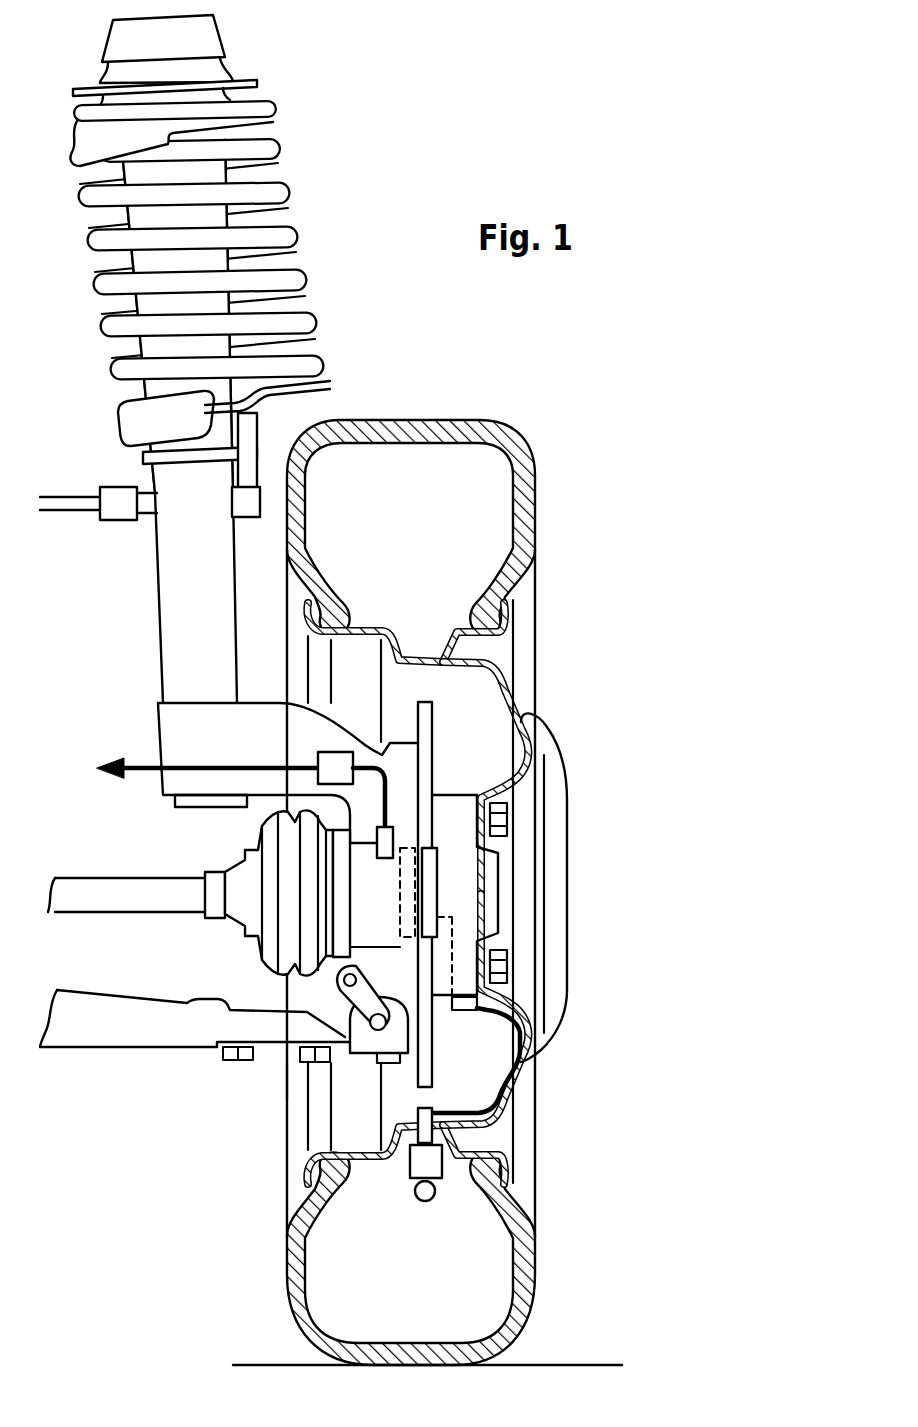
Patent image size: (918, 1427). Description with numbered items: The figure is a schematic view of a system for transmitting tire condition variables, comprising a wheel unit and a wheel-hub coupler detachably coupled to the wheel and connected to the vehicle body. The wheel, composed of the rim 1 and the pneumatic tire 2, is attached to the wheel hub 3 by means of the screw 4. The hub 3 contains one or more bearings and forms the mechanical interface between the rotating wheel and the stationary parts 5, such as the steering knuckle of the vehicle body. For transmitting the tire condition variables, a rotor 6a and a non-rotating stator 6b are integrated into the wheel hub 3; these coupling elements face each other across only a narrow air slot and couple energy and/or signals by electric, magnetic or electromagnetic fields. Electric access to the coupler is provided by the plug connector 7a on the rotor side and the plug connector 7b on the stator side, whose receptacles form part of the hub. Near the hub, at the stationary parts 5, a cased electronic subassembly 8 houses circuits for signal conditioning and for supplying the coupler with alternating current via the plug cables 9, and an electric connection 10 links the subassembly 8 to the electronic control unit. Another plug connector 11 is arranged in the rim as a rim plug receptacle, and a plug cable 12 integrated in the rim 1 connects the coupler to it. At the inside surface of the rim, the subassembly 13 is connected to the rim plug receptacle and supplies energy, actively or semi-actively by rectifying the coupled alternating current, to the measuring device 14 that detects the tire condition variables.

The rim 1 is at (518, 706).
The pneumatic tire 2 is at (487, 463).
The wheel hub 3 is at (362, 857).
The screw 4 is at (500, 818).
The stationary parts 5 is at (175, 718).
The rotor 6a is at (438, 870).
The stator 6b is at (400, 918).
The plug connector 7a is at (462, 1002).
The plug connector 7b is at (395, 833).
The cased electronic subassembly 8 is at (337, 758).
The plug cables 9 is at (388, 784).
The electric connection 10 is at (142, 763).
The plug connector 11 is at (427, 1137).
The plug cable 12 is at (500, 1085).
The subassembly 13 is at (430, 1163).
The measuring device 14 is at (430, 1190).